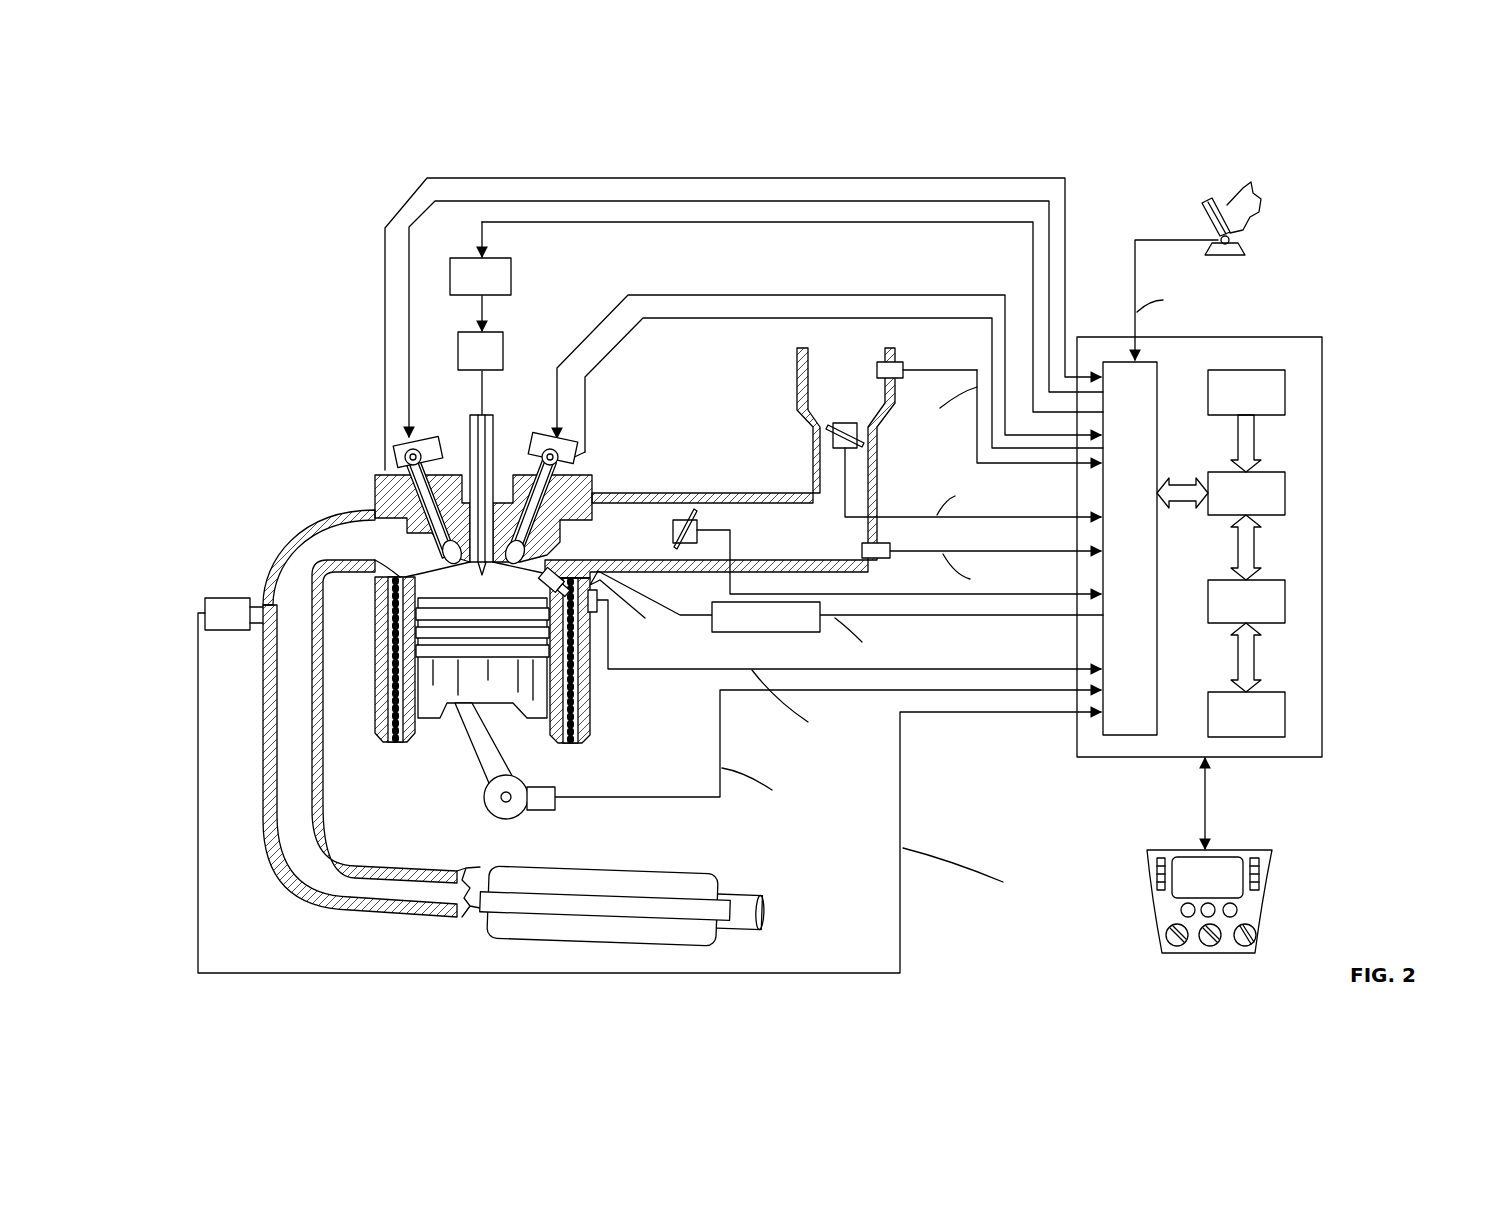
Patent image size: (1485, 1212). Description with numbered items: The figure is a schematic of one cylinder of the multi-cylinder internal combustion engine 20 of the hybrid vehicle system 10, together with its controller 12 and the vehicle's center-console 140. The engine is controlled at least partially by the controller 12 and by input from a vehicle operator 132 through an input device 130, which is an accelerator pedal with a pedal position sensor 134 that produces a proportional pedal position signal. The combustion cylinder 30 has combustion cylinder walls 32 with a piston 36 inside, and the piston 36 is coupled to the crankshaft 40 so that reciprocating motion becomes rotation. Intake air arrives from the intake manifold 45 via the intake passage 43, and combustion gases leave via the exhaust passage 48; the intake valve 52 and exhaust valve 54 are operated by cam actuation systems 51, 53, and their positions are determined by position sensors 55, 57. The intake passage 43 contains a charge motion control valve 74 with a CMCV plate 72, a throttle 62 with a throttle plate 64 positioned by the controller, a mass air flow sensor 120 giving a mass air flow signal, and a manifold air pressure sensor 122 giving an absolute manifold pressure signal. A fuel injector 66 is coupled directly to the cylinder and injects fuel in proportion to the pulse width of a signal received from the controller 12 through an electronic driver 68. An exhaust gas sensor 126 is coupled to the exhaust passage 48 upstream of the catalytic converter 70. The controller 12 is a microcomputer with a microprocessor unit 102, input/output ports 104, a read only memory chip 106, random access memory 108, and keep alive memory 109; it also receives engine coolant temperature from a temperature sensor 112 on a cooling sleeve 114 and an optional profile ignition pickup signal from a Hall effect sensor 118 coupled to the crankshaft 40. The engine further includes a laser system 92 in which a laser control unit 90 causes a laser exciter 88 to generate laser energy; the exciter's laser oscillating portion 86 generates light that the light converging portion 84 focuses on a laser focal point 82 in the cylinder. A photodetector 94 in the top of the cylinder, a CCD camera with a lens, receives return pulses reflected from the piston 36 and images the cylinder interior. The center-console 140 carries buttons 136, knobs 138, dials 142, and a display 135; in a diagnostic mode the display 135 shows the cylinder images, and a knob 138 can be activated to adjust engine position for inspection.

The vehicle system 10 is at (193, 206).
The controller 12 is at (1310, 337).
The internal combustion engine 20 is at (303, 424).
The combustion cylinder 30 is at (460, 580).
The combustion cylinder walls 32 is at (425, 742).
The piston 36 is at (463, 687).
The crankshaft 40 is at (500, 815).
The intake passage 43 is at (846, 454).
The intake manifold 45 is at (706, 535).
The exhaust passage 48 is at (360, 696).
The cam actuation system 51 is at (552, 437).
The intake valve 52 is at (532, 545).
The cam actuation system 53 is at (418, 440).
The exhaust valve 54 is at (443, 558).
The position sensor 55 is at (568, 460).
The position sensor 57 is at (404, 462).
The throttle 62 is at (857, 432).
The throttle plate 64 is at (822, 430).
The fuel injector 66 is at (625, 603).
The electronic driver 68 is at (740, 633).
The catalytic converter 70 is at (692, 870).
The CMCV plate 72 is at (674, 518).
The charge motion control valve 74 is at (693, 513).
The laser focal point 82 is at (490, 570).
The light converging portion 84 is at (493, 567).
The laser oscillating portion 86 is at (480, 333).
The laser exciter 88 is at (487, 430).
The laser control unit 90 is at (776, 317).
The laser system 92 is at (428, 228).
The photodetector 94 is at (486, 486).
The microprocessor unit 102 is at (1287, 496).
The input/output ports 104 is at (1160, 368).
The read only memory chip 106 is at (1287, 388).
The random access memory 108 is at (1287, 601).
The keep alive memory 109 is at (1287, 713).
The temperature sensor 112 is at (597, 600).
The cooling sleeve 114 is at (570, 690).
The Hall effect sensor 118 is at (545, 812).
The mass air flow sensor 120 is at (897, 362).
The manifold air pressure sensor 122 is at (882, 560).
The exhaust gas sensor 126 is at (236, 598).
The input device 130 is at (1261, 262).
The vehicle operator 132 is at (1262, 200).
The pedal position sensor 134 is at (1245, 248).
The display 135 is at (1207, 877).
The buttons 136 is at (1157, 875).
The knobs 138 is at (1237, 913).
The center-console 140 is at (1216, 855).
The dials 142 is at (1258, 940).